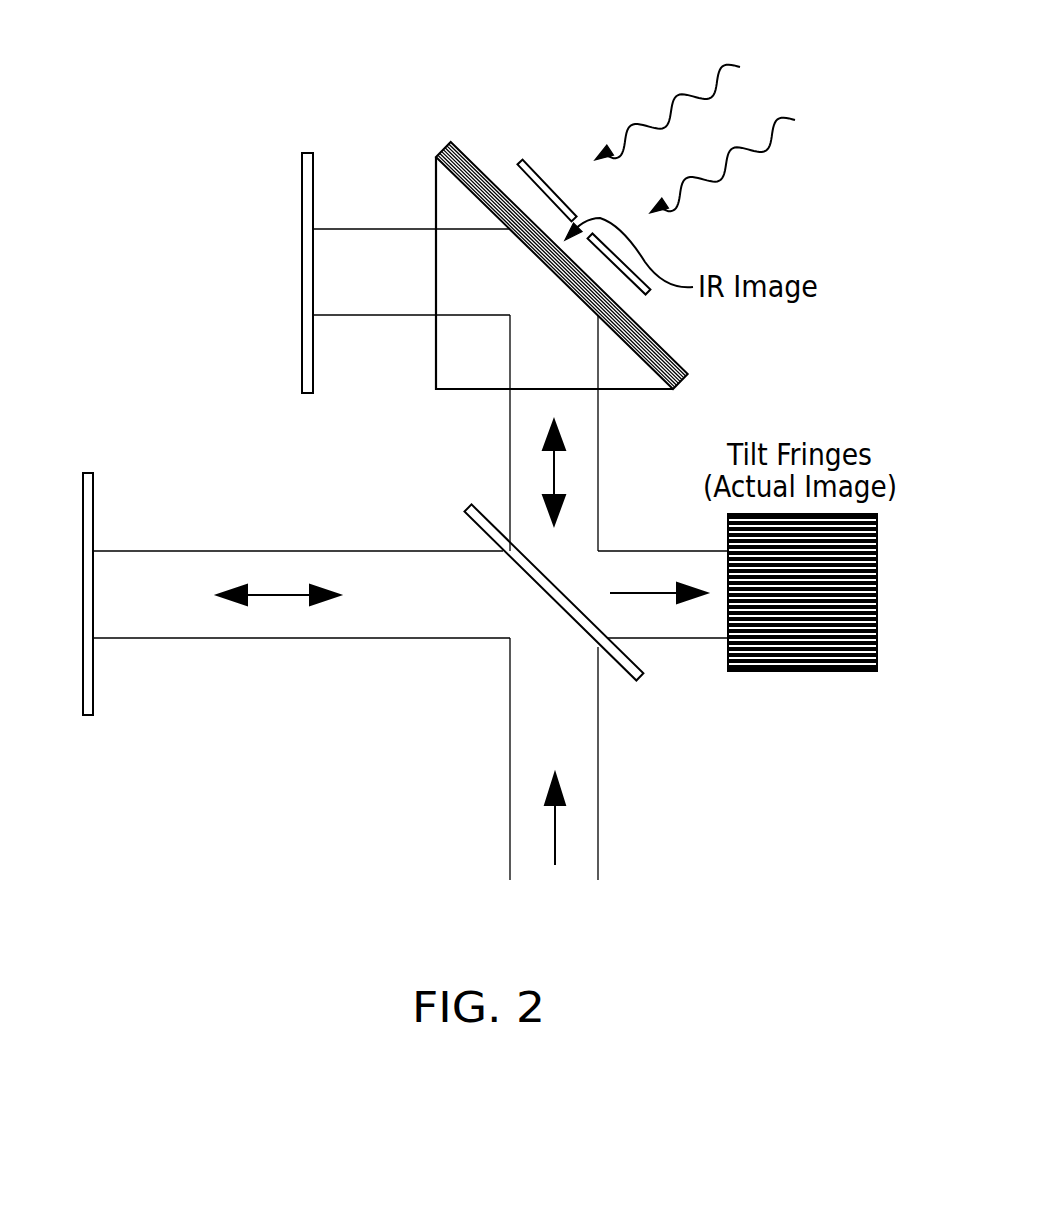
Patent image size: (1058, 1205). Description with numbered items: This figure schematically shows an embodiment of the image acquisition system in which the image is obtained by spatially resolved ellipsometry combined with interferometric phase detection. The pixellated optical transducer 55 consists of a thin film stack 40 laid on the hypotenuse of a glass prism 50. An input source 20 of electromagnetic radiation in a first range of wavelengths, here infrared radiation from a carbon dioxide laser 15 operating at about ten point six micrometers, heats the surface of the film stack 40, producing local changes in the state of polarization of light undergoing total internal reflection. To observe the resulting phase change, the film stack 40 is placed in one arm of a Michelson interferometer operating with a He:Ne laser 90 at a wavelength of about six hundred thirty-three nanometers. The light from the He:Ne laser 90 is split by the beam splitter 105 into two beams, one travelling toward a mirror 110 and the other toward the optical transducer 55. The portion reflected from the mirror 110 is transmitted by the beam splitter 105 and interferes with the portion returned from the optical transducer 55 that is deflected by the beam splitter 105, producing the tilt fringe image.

The CO2 laser beam 15 is at (772, 63).
The input source 20 is at (788, 155).
The film stack 40 is at (478, 163).
The glass prism 50 is at (448, 345).
The pixellated optical transducer 55 is at (437, 108).
The He:Ne laser 90 is at (555, 840).
The beam splitter 105 is at (623, 677).
The mirror 110 is at (93, 680).